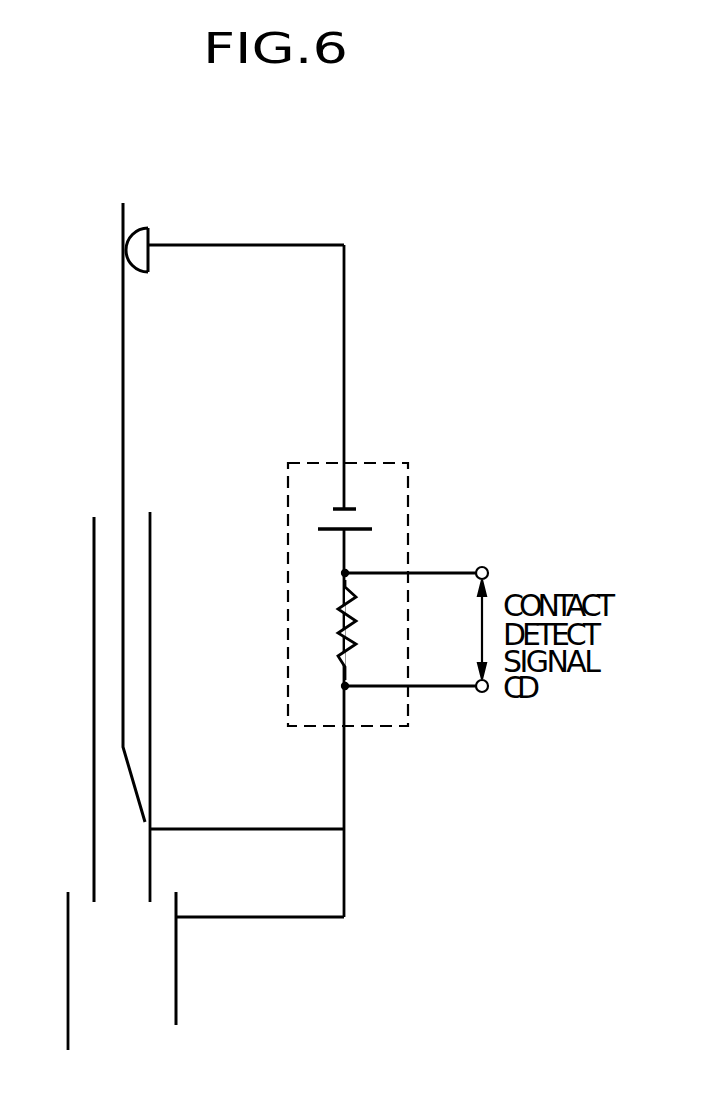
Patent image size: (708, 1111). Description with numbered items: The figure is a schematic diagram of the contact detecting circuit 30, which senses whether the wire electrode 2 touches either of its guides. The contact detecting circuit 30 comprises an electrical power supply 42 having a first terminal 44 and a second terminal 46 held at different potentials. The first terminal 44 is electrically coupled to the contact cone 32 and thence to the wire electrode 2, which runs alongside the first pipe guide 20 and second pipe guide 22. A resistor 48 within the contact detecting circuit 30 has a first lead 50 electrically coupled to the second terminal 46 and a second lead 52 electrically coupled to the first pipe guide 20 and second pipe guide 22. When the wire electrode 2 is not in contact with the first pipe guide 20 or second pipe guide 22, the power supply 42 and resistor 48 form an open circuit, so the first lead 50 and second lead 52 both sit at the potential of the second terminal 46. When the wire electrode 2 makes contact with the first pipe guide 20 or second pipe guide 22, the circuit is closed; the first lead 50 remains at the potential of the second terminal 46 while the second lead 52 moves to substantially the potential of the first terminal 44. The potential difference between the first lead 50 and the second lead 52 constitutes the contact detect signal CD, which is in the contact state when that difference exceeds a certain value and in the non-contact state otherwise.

The wire electrode 2 is at (123, 420).
The first pipe guide 20 is at (94, 698).
The second pipe guide 22 is at (176, 988).
The contact detecting circuit 30 is at (393, 728).
The contact cone 32 is at (150, 232).
The electrical power supply 42 is at (364, 516).
The first terminal 44 is at (344, 480).
The second terminal 46 is at (347, 548).
The resistor 48 is at (344, 640).
The first lead 50 is at (344, 588).
The second lead 52 is at (344, 682).